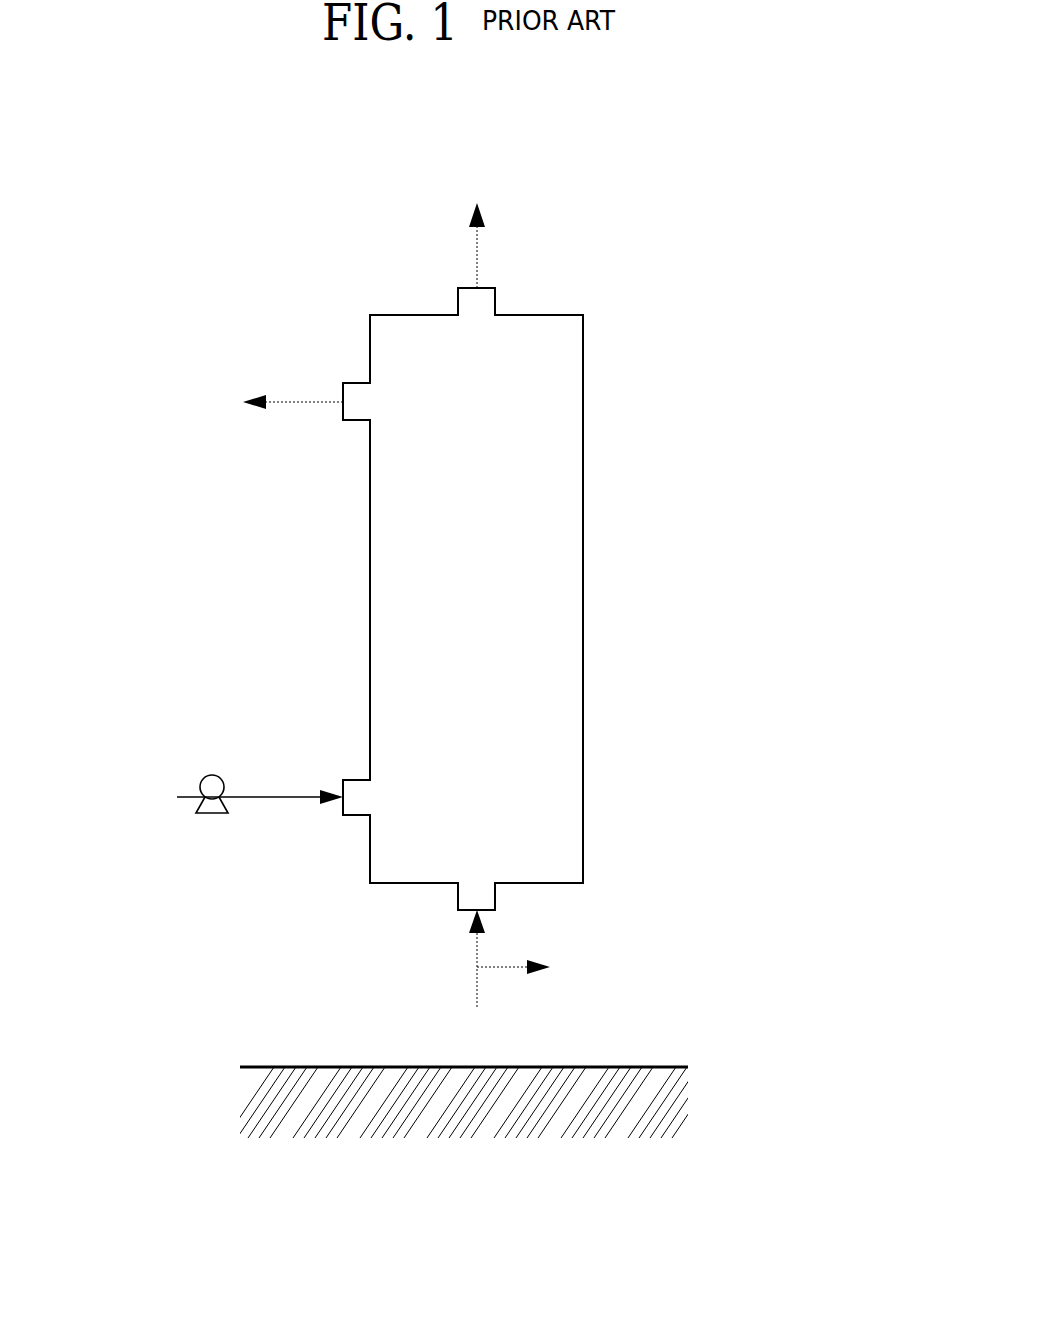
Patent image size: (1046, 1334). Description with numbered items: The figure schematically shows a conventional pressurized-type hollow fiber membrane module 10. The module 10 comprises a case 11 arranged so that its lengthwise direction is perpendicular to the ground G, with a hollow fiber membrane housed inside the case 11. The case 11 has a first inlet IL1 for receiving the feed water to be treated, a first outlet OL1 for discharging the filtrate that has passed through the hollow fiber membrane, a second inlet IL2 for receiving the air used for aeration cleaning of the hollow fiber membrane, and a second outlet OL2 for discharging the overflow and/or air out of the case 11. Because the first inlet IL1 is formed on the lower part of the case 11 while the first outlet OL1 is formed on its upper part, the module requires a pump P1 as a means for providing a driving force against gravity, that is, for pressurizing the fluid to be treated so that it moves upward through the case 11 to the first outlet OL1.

The pressurized-type hollow fiber membrane module 10 is at (278, 157).
The case 11 is at (585, 597).
The first outlet OL1 is at (497, 303).
The second outlet OL2 is at (357, 382).
The first inlet IL1 is at (357, 780).
The second inlet IL2 is at (498, 893).
The pump P1 is at (200, 778).
The ground G is at (622, 1067).